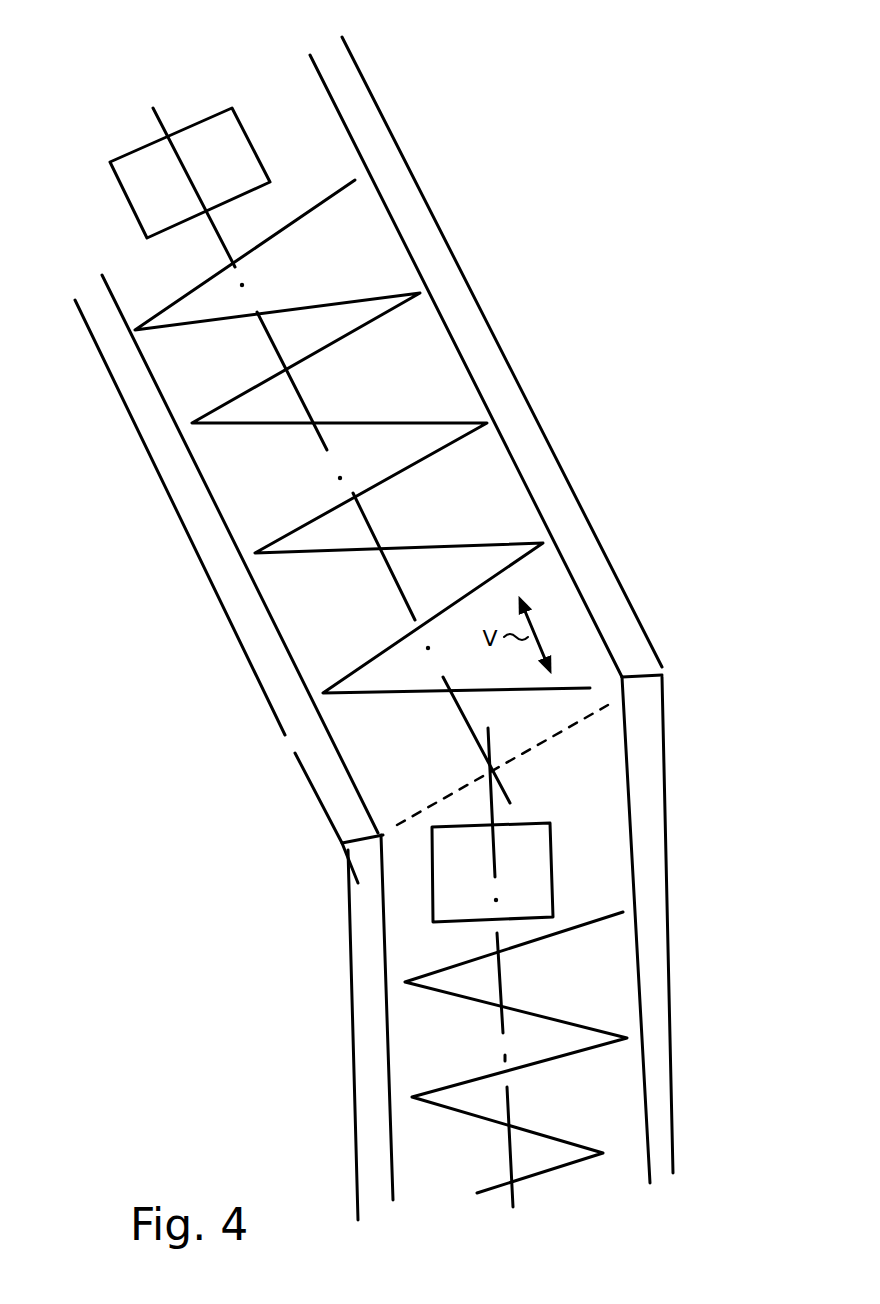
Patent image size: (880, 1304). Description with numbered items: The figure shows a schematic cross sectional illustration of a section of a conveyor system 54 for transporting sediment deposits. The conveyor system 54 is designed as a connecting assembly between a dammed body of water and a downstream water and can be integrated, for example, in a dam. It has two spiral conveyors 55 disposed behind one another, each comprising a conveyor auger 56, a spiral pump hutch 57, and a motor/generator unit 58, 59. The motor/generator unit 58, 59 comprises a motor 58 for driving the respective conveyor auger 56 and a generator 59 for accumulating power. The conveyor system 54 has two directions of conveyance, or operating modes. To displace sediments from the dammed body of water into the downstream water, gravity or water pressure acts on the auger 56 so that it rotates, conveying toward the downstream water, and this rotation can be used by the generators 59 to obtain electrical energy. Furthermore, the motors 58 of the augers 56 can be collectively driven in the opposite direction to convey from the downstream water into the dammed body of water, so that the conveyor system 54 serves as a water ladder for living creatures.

The conveyor system 54 is at (712, 425).
The spiral conveyor 55 is at (187, 636).
The conveyor auger 56 is at (420, 293).
The spiral pump hutch 57 is at (505, 403).
The motor 58 is at (150, 172).
The generator 59 is at (217, 132).